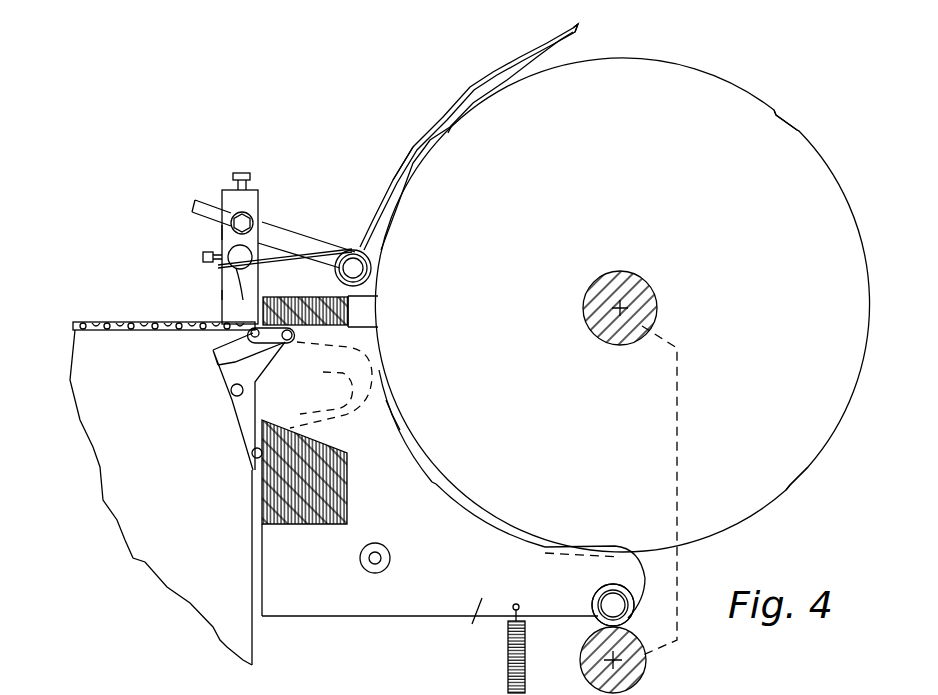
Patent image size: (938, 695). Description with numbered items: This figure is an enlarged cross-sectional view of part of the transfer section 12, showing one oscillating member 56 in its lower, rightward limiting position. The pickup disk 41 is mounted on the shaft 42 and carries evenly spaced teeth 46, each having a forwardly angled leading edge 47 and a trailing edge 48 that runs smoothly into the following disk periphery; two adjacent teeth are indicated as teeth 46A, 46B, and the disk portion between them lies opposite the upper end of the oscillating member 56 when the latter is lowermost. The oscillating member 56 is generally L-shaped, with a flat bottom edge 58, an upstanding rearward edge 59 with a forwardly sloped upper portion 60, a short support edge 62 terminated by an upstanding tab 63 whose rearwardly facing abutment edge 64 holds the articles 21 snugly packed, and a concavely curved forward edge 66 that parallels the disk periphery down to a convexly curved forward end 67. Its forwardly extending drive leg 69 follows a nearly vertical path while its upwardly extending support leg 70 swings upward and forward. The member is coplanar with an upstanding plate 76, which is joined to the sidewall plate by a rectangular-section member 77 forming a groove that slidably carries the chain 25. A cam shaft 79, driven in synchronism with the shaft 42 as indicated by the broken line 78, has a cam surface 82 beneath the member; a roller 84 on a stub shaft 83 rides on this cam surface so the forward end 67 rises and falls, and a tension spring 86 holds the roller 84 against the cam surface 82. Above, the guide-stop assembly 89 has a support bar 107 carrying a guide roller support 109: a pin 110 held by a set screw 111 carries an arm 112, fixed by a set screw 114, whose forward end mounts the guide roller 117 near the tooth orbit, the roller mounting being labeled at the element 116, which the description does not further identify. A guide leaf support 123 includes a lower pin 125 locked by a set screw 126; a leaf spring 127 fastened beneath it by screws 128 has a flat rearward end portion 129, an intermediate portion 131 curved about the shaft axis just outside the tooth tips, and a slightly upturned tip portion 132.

The transfer section 12 is at (383, 551).
The articles 21 is at (311, 515).
The chain 25 is at (122, 322).
The pickup disk 41 is at (657, 218).
The shaft 42 is at (647, 300).
The teeth 46 is at (797, 123).
The tooth 46A is at (447, 132).
The tooth 46B is at (456, 486).
The leading edge 47 is at (798, 132).
The trailing edge 48 is at (776, 112).
The oscillating member 56 is at (409, 460).
The bottom edge 58 is at (352, 616).
The rearward edge 59 is at (252, 574).
The sloped upper portion 60 is at (224, 386).
The support edge 62 is at (293, 338).
The tab 63 is at (366, 317).
The abutment edge 64 is at (350, 300).
The forward edge 66 is at (402, 431).
The forward end 67 is at (632, 572).
The drive leg 69 is at (470, 622).
The support leg 70 is at (343, 383).
The upstanding plate 76 is at (93, 379).
The longitudinally extending member 77 is at (233, 347).
The broken line 78 is at (680, 378).
The cam shaft 79 is at (640, 672).
The cam surface 82 is at (583, 665).
The stub shaft 83 is at (612, 605).
The roller 84 is at (630, 620).
The spring 86 is at (508, 670).
The guide-stop assembly 89 is at (194, 138).
The support bar 107 is at (258, 200).
The guide roller support 109 is at (207, 233).
The pin 110 is at (233, 216).
The set screw 111 is at (240, 172).
The arm 112 is at (293, 226).
The set screw 114 is at (196, 208).
The roller 116 is at (354, 256).
The guide roller 117 is at (348, 250).
The guide leaf support 123 is at (216, 293).
The pin 125 is at (230, 264).
The set screw 126 is at (201, 258).
The leaf spring 127 is at (482, 78).
The screws 128 is at (240, 276).
The rearward end portion 129 is at (285, 272).
The intermediate portion 131 is at (424, 150).
The tip portion 132 is at (574, 30).